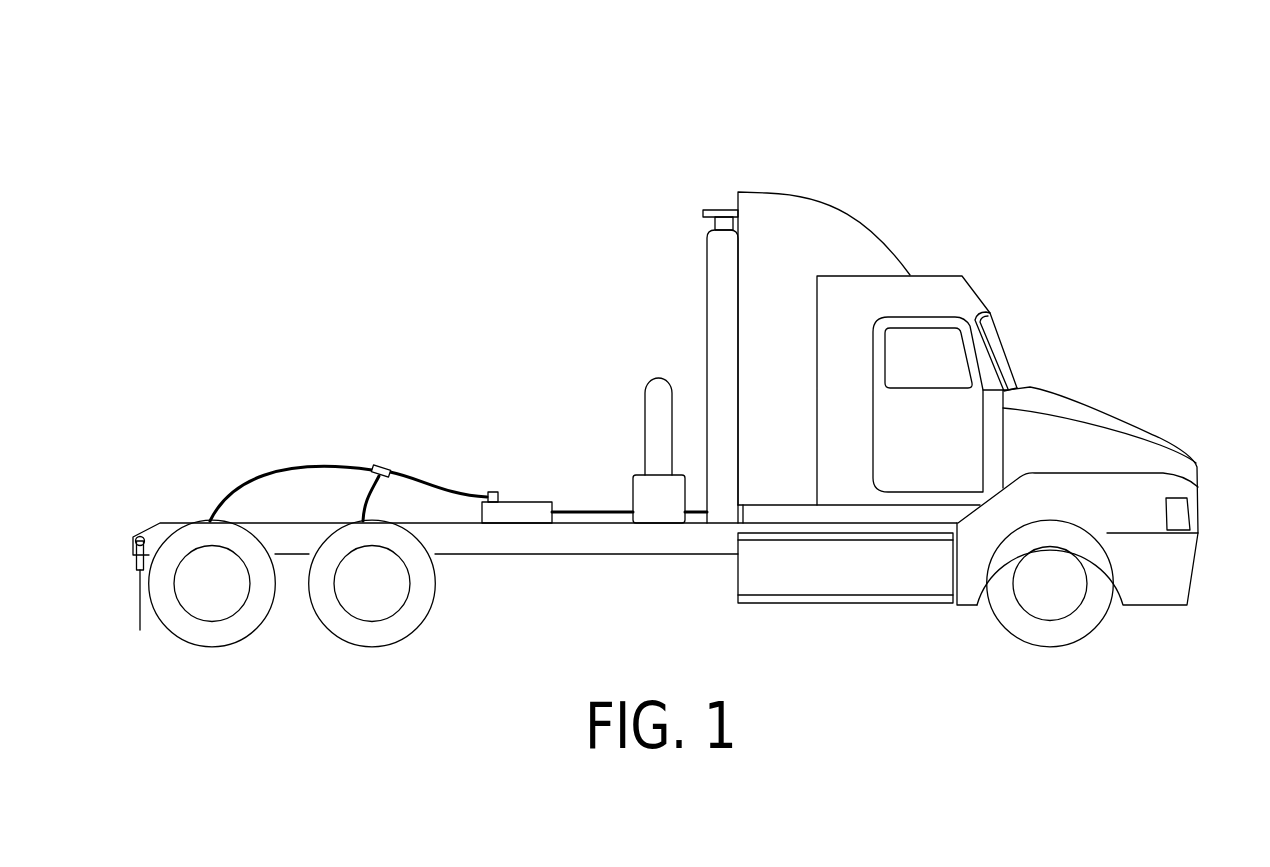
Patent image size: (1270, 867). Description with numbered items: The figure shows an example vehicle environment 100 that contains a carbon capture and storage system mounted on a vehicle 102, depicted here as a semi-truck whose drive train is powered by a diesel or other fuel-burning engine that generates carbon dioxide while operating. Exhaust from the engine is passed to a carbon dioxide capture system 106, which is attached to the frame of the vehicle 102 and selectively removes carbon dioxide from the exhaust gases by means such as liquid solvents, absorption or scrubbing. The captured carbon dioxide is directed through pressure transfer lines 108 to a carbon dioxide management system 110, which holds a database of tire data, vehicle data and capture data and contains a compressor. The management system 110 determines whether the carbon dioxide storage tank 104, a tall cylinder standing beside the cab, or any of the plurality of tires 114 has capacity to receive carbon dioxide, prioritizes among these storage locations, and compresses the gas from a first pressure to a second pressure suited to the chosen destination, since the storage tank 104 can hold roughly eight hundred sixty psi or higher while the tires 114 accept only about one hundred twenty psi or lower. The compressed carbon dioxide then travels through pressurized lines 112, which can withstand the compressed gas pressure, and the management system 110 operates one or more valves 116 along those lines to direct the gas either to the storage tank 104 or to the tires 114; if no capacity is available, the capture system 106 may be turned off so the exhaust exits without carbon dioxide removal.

The vehicle environment 100 is at (1152, 149).
The vehicle 102 is at (861, 221).
The carbon dioxide storage tank 104 is at (705, 242).
The carbon dioxide capture system 106 is at (660, 378).
The pressure transfer lines 108 is at (595, 510).
The carbon dioxide management system 110 is at (528, 500).
The pressurized lines 112 is at (420, 478).
The tires 114 is at (203, 646).
The valves 116 is at (382, 466).